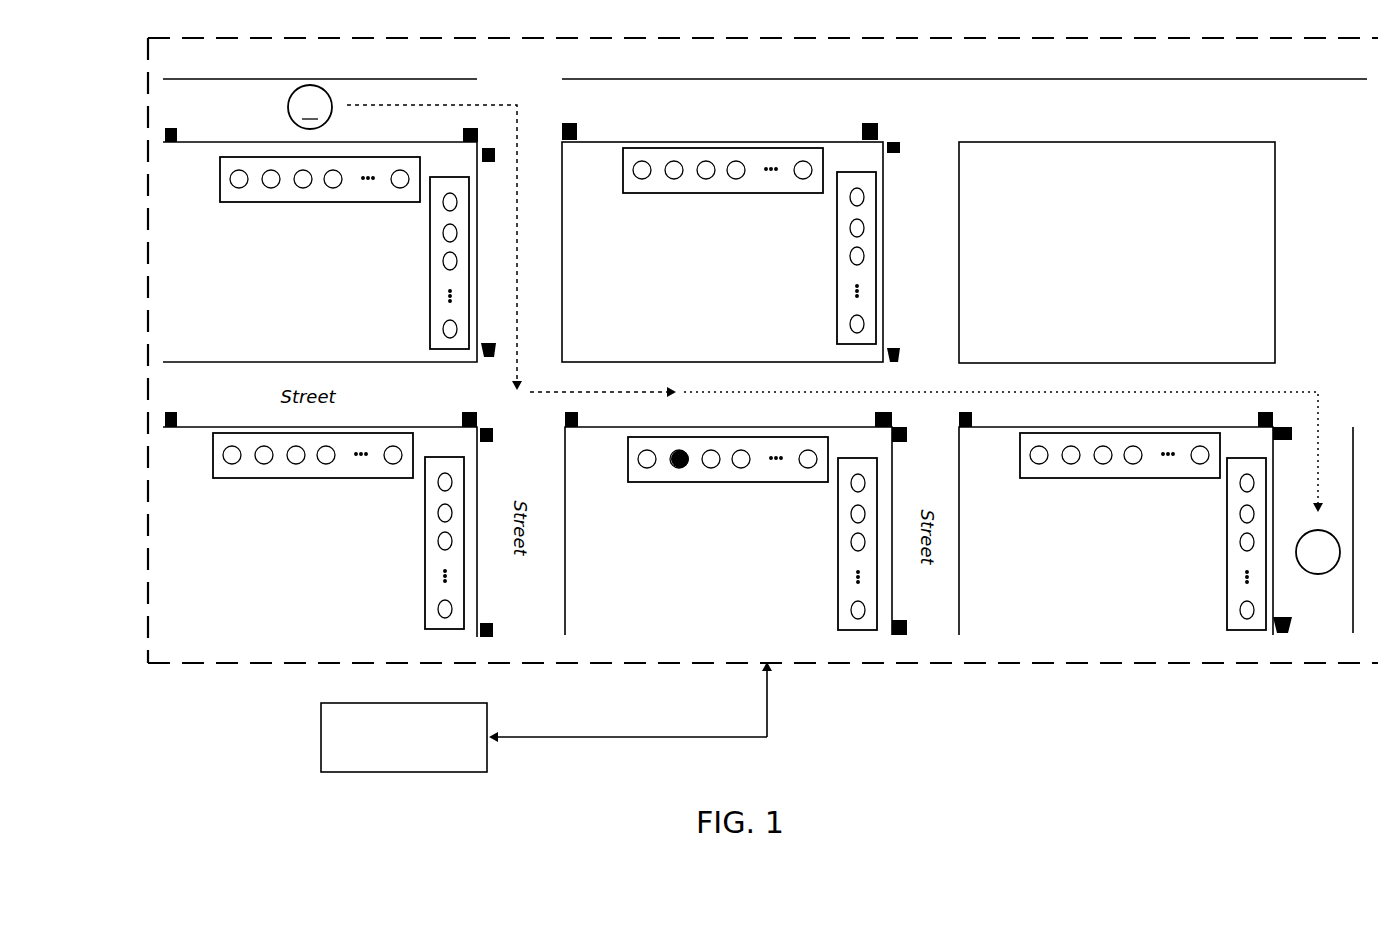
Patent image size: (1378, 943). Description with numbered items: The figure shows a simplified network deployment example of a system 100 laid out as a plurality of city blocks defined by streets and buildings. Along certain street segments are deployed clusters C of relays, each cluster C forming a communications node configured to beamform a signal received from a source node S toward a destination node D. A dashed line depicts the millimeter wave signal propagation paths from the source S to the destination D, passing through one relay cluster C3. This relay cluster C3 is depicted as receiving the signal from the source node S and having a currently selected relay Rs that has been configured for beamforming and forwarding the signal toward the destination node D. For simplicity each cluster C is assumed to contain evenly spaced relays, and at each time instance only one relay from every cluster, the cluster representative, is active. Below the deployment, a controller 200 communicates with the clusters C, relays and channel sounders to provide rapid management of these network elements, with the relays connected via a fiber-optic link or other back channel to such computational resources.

The system 100 is at (1303, 742).
The controller 200 is at (321, 738).
The source node S is at (730, 371).
The cluster of relays C is at (732, 389).
The relay cluster C3 is at (645, 483).
The currently selected relay Rs is at (675, 469).
The destination node D is at (1310, 564).